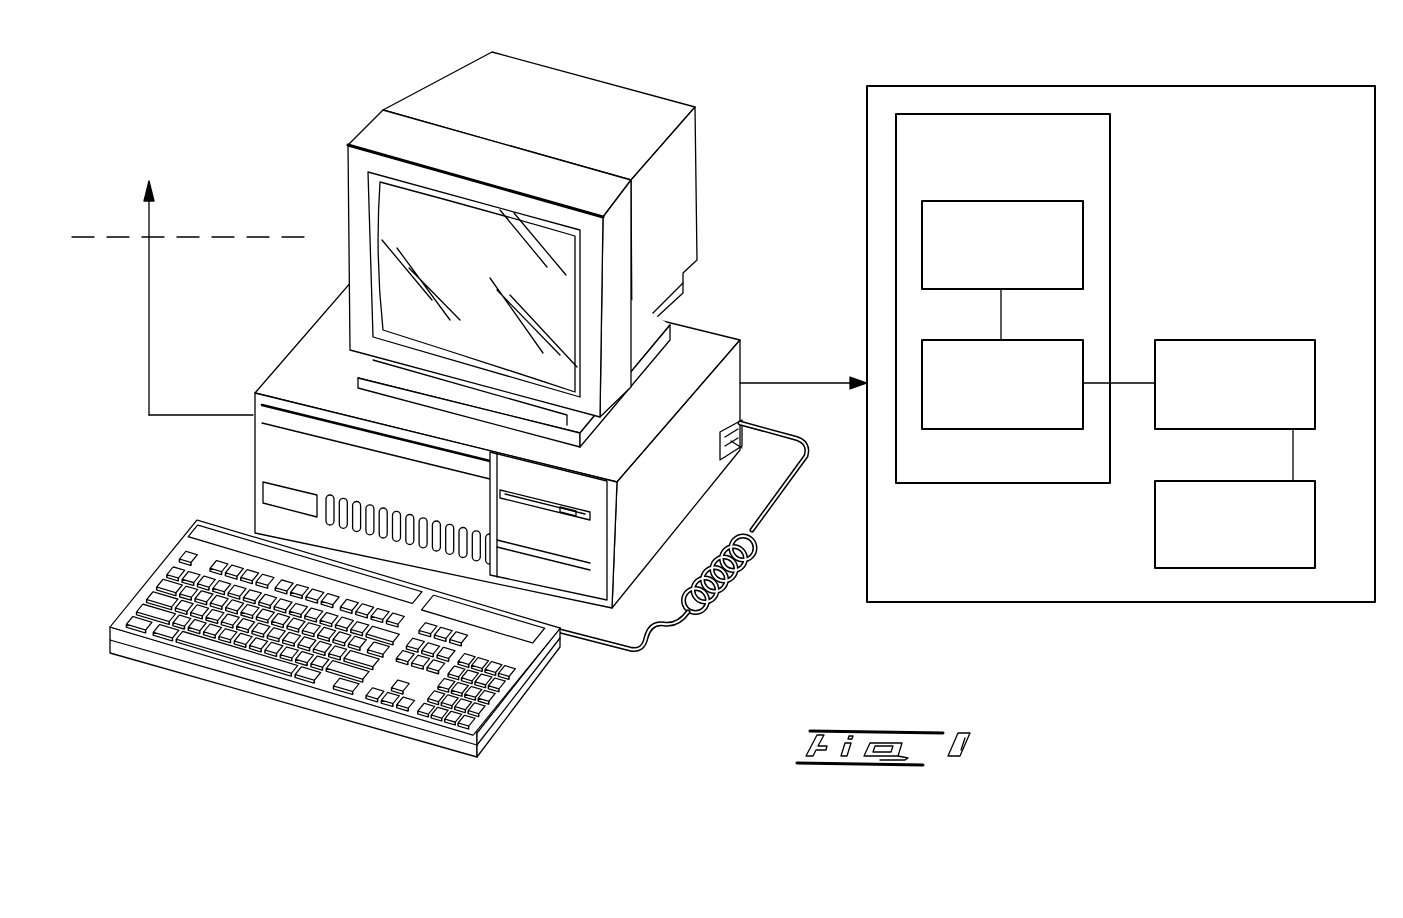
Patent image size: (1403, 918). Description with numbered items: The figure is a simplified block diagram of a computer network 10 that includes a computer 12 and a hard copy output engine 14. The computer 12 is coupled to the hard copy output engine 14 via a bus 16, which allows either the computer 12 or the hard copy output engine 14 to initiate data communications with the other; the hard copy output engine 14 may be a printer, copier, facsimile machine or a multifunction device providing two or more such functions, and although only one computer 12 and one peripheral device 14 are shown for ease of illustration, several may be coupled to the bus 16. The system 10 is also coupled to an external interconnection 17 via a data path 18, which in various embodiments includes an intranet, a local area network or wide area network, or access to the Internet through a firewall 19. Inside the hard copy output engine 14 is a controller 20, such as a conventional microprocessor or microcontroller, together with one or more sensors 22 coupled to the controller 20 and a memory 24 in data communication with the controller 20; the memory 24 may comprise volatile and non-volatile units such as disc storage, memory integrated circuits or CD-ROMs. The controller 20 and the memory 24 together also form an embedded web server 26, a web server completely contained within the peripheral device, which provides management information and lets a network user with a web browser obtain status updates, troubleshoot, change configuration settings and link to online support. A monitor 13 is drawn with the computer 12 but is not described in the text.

The computer network 10 is at (458, 444).
The computer 12 is at (293, 342).
The monitor 13 is at (650, 93).
The hard copy output engine 14 is at (1121, 369).
The bus 16 is at (770, 380).
The external interconnection 17 is at (150, 281).
The data path 18 is at (213, 417).
The firewall 19 is at (217, 237).
The controller 20 is at (986, 429).
The sensors 22 is at (1278, 340).
The memory 24 is at (1083, 242).
The embedded web server 26 is at (1047, 298).